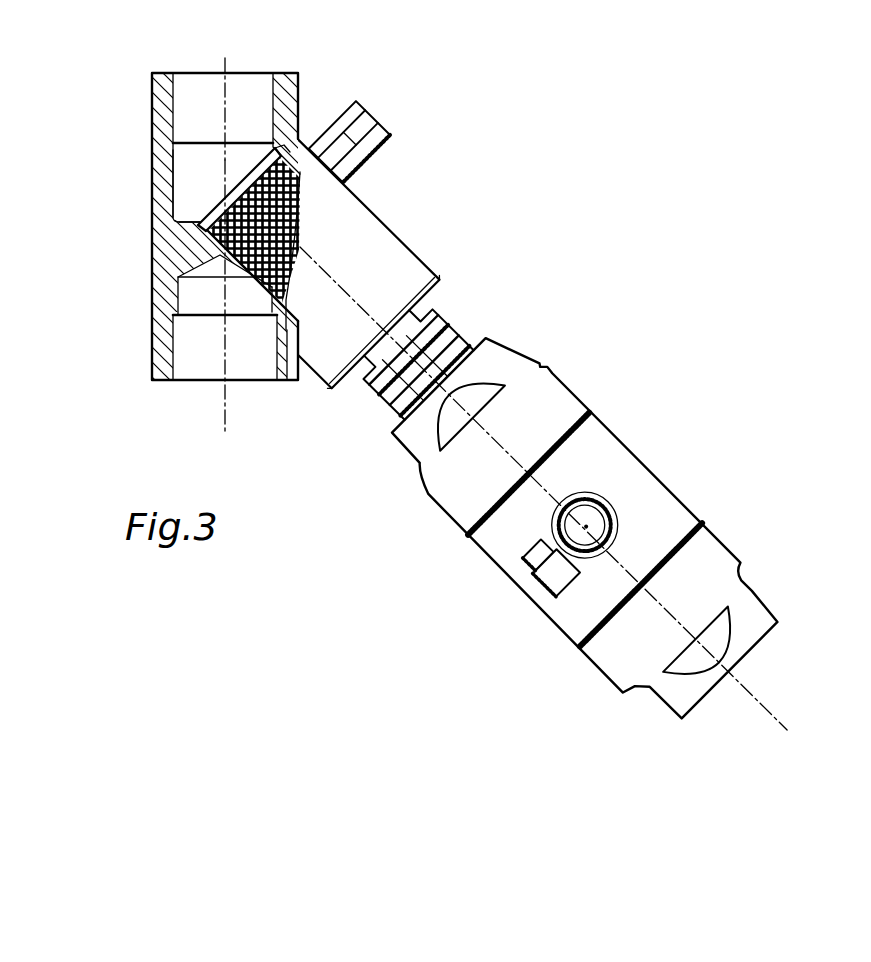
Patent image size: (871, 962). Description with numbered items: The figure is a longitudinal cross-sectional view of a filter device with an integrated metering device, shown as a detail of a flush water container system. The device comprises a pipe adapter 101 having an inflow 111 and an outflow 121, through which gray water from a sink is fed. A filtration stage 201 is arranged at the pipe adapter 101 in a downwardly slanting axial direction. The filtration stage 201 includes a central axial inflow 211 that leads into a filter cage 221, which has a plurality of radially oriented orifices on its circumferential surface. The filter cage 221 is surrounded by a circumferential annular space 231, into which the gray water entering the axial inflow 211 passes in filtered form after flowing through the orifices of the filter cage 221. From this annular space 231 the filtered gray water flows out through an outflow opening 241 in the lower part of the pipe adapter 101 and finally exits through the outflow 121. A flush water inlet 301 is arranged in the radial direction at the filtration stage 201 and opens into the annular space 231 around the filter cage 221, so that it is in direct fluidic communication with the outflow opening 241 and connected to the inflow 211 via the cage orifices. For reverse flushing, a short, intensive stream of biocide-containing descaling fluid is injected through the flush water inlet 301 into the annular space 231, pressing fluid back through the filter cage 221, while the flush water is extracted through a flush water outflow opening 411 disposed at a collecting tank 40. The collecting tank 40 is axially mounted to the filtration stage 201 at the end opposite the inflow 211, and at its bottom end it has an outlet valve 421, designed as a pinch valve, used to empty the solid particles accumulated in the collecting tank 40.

The collecting tank 40 is at (598, 457).
The pipe adapter 101 is at (176, 242).
The inflow 111 is at (254, 64).
The outflow 121 is at (199, 394).
The filtration stage 201 is at (400, 168).
The central axial inflow 211 is at (218, 184).
The filter cage 221 is at (300, 222).
The annular space 231 is at (291, 142).
The outflow opening 241 is at (229, 286).
The flush water inlet 301 is at (302, 186).
The flush water outflow opening 411 is at (522, 568).
The outlet valve 421 is at (727, 647).